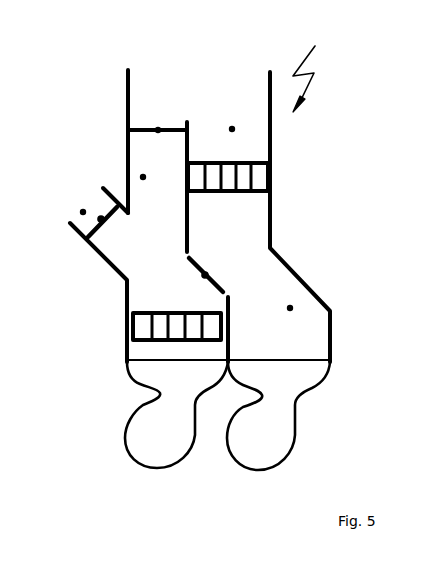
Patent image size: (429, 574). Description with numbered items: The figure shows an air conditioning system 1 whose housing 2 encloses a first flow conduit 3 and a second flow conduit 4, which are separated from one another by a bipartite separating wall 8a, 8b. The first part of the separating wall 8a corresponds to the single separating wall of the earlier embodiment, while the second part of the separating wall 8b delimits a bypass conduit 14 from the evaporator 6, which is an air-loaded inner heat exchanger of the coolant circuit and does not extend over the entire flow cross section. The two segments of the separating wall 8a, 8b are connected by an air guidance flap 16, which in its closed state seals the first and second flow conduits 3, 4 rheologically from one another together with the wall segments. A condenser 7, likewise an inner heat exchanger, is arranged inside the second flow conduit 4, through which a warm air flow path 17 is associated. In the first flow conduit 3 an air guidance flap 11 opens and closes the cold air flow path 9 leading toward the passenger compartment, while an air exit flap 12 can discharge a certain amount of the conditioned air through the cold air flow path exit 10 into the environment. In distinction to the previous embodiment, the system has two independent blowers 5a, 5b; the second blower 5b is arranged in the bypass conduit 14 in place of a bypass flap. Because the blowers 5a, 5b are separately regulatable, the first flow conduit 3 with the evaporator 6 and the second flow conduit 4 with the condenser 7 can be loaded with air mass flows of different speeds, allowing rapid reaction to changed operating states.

The air conditioning system 1 is at (309, 69).
The housing 2 is at (127, 99).
The first flow conduit 3 is at (127, 134).
The second flow conduit 4 is at (273, 213).
The blower 5a is at (152, 435).
The blower 5b is at (258, 435).
The evaporator 6 is at (143, 323).
The condenser 7 is at (262, 172).
The separating wall 8a is at (188, 206).
The separating wall 8b is at (230, 299).
The cold air flow path 9 is at (141, 176).
The cold air flow path exit 10 is at (81, 211).
The air guidance flap 11 is at (160, 128).
The air exit flap 12 is at (103, 220).
The bypass conduit 14 is at (292, 307).
The air guidance flap 16 is at (202, 276).
The warm air flow path 17 is at (233, 127).